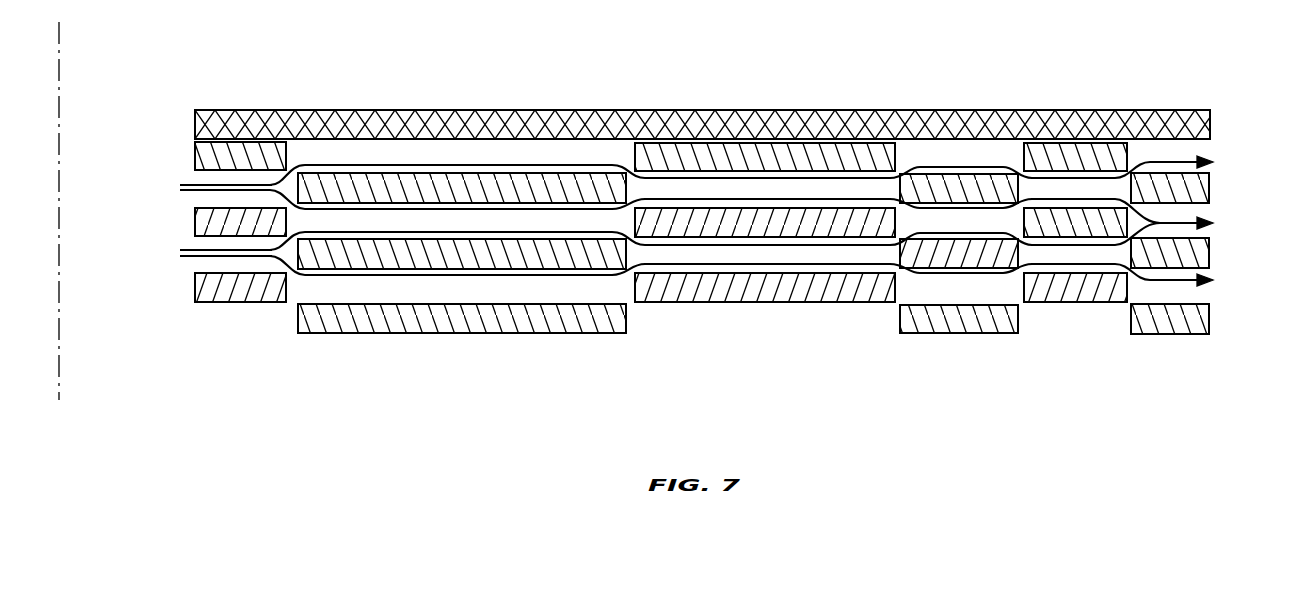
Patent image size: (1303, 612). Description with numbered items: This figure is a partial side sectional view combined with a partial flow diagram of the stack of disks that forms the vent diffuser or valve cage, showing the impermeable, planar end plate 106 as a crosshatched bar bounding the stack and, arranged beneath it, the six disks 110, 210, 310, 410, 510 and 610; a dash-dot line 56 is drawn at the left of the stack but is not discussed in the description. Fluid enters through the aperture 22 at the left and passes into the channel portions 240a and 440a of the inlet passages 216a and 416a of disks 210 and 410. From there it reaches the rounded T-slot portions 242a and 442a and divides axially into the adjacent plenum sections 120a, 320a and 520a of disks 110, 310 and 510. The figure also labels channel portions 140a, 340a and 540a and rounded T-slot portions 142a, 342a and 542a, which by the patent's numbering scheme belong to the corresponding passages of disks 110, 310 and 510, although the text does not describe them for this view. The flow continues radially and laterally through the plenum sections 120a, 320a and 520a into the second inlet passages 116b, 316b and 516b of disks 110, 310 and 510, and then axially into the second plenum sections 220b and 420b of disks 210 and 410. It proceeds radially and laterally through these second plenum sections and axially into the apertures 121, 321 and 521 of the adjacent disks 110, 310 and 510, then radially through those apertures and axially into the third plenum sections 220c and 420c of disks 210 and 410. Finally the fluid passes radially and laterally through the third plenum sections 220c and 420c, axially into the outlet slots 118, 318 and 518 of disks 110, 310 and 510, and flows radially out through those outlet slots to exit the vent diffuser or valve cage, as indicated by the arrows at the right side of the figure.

The aperture 22 is at (36, 140).
The centerline 56 is at (60, 77).
The end plate 106 is at (1005, 123).
The disk 110 is at (193, 153).
The second inlet passage 116b is at (600, 153).
The outlet slot 118 is at (1215, 163).
The plenum section 120a is at (462, 177).
The aperture 121 is at (961, 175).
The first separating wall 140a is at (628, 157).
The first wall transition 142a is at (658, 145).
The disk 210 is at (1208, 189).
The inlet passage 216a is at (203, 178).
The second plenum section 220b is at (751, 193).
The third plenum section 220c is at (1075, 171).
The channel portion 240a is at (273, 198).
The rounded T-slot portion 242a is at (295, 170).
The disk 310 is at (193, 223).
The second inlet passage 316b is at (600, 235).
The outlet slot 318 is at (1215, 223).
The plenum section 320a is at (462, 241).
The aperture 321 is at (961, 243).
The third separating wall 340a is at (634, 238).
The third wall transition 342a is at (633, 238).
The disk 410 is at (1208, 254).
The inlet passage 416a is at (203, 245).
The second plenum section 420b is at (767, 254).
The third plenum section 420c is at (1075, 236).
The channel portion 440a is at (273, 265).
The rounded T-slot portion 442a is at (298, 273).
The disk 510 is at (193, 288).
The second inlet passage 516b is at (590, 295).
The outlet slot 518 is at (1215, 286).
The plenum section 520a is at (462, 308).
The aperture 521 is at (959, 307).
The fifth separating wall 540a is at (620, 282).
The fifth wall transition 542a is at (629, 243).
The disk 610 is at (1208, 320).